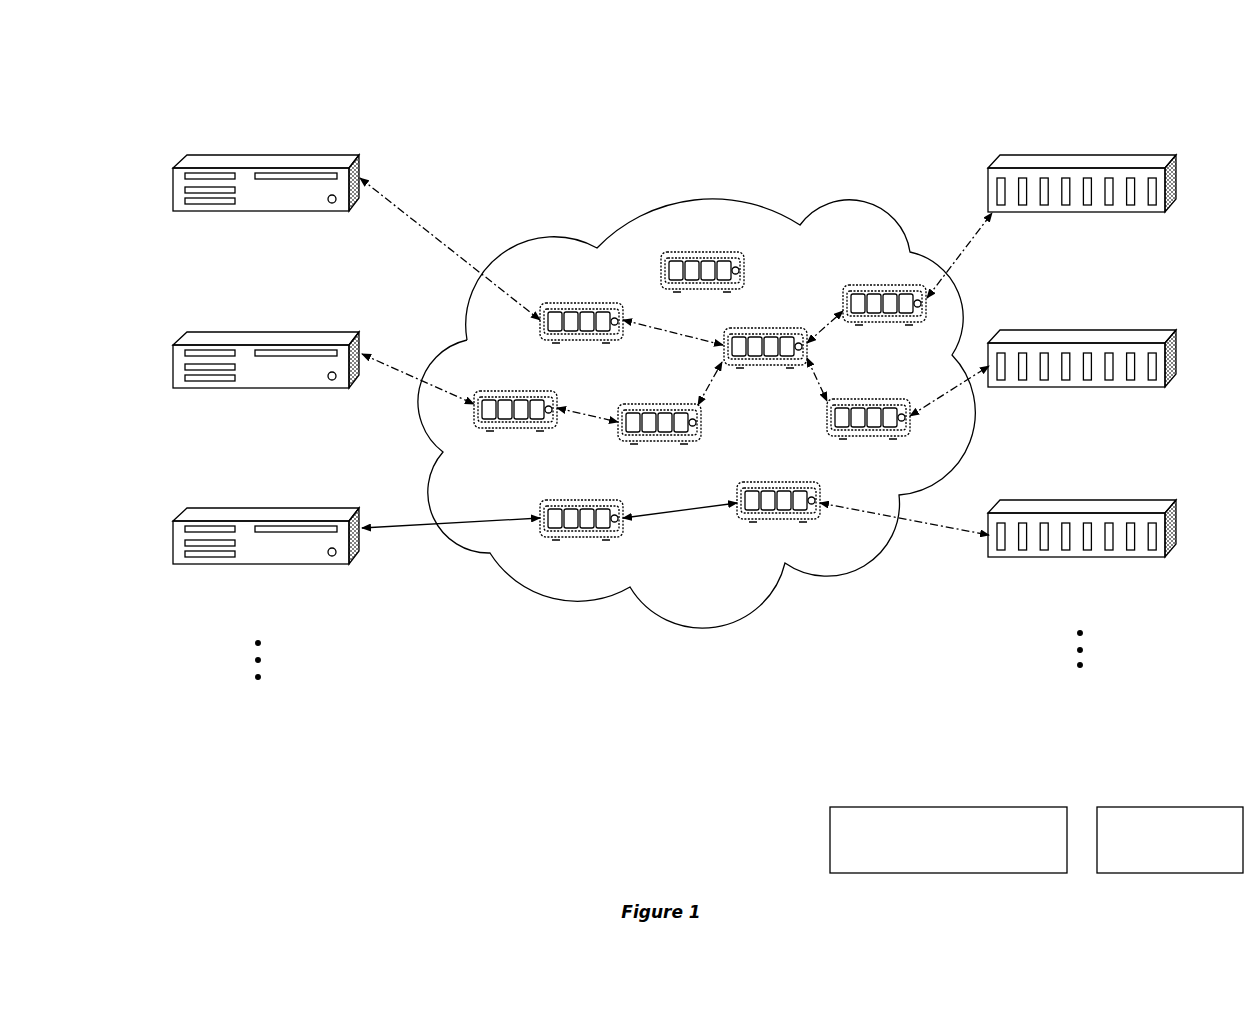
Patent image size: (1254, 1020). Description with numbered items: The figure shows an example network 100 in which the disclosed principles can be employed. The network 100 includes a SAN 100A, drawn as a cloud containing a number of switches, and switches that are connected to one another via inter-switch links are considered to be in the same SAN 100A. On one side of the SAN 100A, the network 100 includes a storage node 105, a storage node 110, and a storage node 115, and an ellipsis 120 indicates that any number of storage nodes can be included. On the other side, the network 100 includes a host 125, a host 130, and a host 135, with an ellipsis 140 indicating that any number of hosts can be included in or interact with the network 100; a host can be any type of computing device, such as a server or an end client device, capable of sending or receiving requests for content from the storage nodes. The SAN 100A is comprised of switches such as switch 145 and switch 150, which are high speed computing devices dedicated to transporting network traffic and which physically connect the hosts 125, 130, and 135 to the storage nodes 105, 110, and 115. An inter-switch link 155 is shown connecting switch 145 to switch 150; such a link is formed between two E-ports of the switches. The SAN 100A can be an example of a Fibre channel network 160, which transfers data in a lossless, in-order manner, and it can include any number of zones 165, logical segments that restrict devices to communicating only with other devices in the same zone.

The network 100 is at (668, 438).
The SAN 100A is at (696, 380).
The storage node 105 is at (1104, 143).
The storage node 110 is at (1104, 319).
The storage node 115 is at (1104, 492).
The ellipsis 120 is at (1130, 646).
The host 125 is at (226, 158).
The host 130 is at (226, 334).
The host 135 is at (226, 510).
The ellipsis 140 is at (191, 637).
The switch 145 is at (518, 610).
The switch 150 is at (778, 605).
The inter-switch link 155 is at (644, 627).
The Fibre channel network 160 is at (948, 840).
The zones 165 is at (1170, 840).